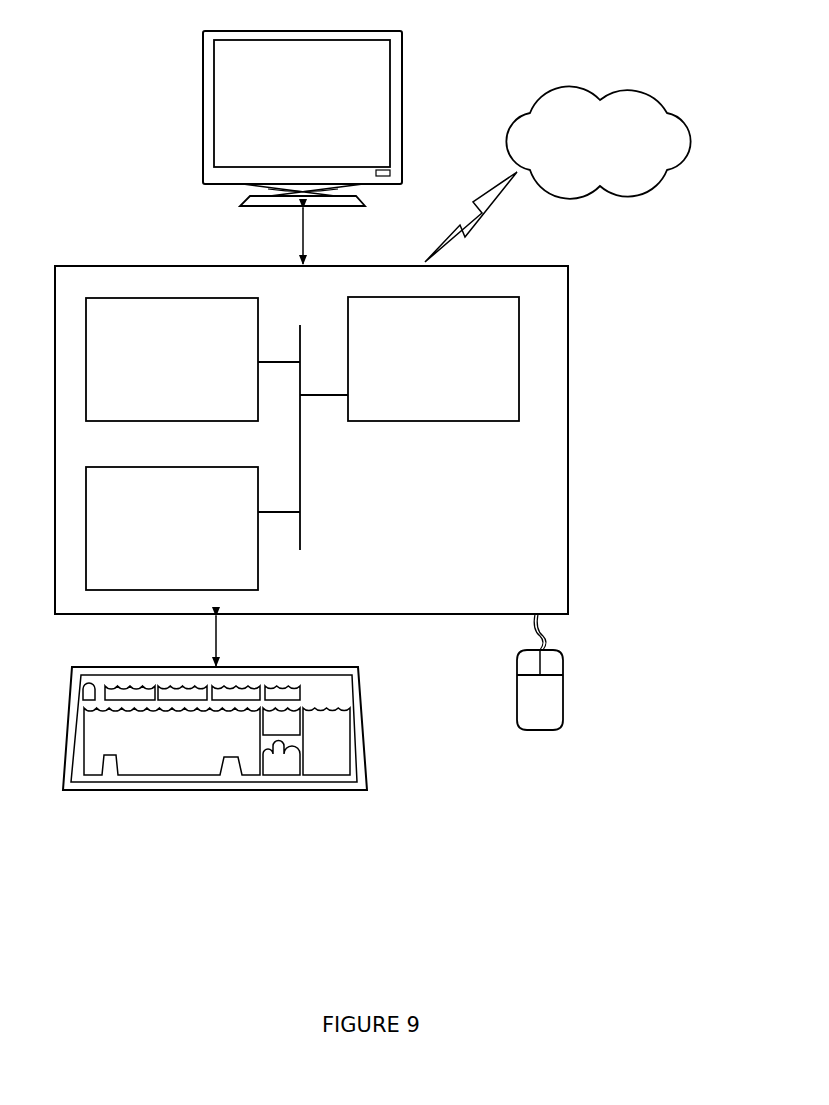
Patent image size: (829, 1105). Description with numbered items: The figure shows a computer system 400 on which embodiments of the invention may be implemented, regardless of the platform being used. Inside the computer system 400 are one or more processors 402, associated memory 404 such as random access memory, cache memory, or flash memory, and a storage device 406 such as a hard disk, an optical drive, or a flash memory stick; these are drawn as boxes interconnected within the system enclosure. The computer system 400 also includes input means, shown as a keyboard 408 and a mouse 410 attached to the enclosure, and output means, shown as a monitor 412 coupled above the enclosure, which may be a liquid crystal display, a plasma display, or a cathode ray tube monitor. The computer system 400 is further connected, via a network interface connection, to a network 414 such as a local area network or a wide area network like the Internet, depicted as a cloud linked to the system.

The computer system 400 is at (612, 272).
The processor 402 is at (432, 369).
The memory 404 is at (157, 369).
The storage device 406 is at (153, 537).
The keyboard 408 is at (148, 759).
The mouse 410 is at (525, 707).
The monitor 412 is at (287, 123).
The network 414 is at (585, 156).